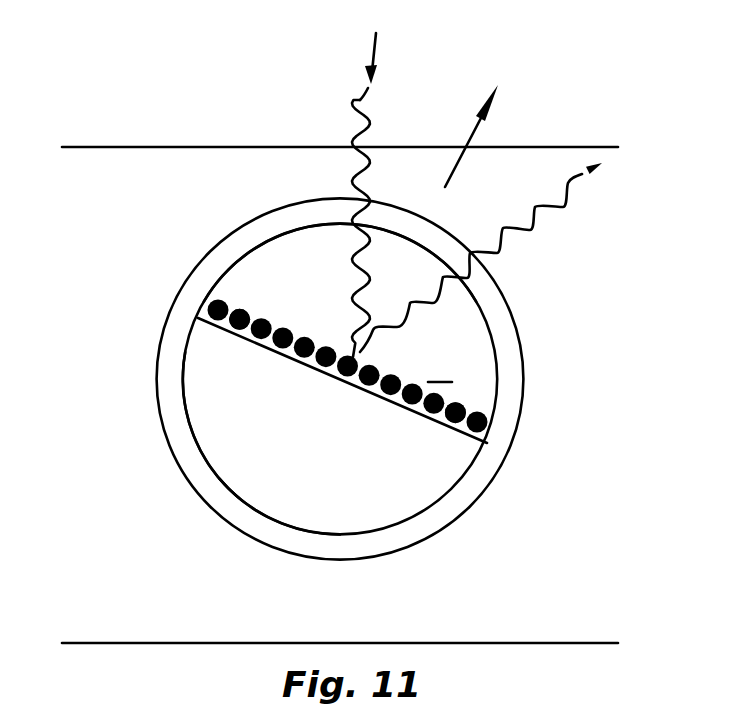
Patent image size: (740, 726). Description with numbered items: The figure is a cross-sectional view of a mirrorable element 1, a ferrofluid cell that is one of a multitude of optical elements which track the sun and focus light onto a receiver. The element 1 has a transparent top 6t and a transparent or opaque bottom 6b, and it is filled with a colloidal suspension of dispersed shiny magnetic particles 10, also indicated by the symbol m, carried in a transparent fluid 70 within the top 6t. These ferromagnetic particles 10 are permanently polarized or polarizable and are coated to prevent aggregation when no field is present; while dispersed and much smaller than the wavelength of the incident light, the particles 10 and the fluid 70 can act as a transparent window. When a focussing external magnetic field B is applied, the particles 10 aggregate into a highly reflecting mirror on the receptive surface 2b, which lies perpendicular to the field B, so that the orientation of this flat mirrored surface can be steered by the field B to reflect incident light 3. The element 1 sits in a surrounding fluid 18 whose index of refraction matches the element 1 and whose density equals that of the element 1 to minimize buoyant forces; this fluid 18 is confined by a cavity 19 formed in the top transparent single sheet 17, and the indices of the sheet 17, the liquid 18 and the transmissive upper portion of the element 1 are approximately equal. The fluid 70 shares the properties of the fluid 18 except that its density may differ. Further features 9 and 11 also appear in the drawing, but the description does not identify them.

The mirrorable element 1 is at (334, 478).
The receptive surface 2b is at (297, 362).
The light 3 is at (360, 100).
The transparent top 6t is at (300, 253).
The bottom 6b is at (243, 442).
The tube wall 9 is at (290, 500).
The magnetic particles 10 is at (305, 337).
The surrounding medium 11 is at (170, 557).
The top transparent single sheet 17 is at (145, 200).
The fluid 18 is at (510, 367).
The cavity 19 is at (513, 433).
The transparent fluid 70 is at (442, 325).
The external magnetic field B is at (499, 128).
The magnetic particle symbol m is at (347, 381).